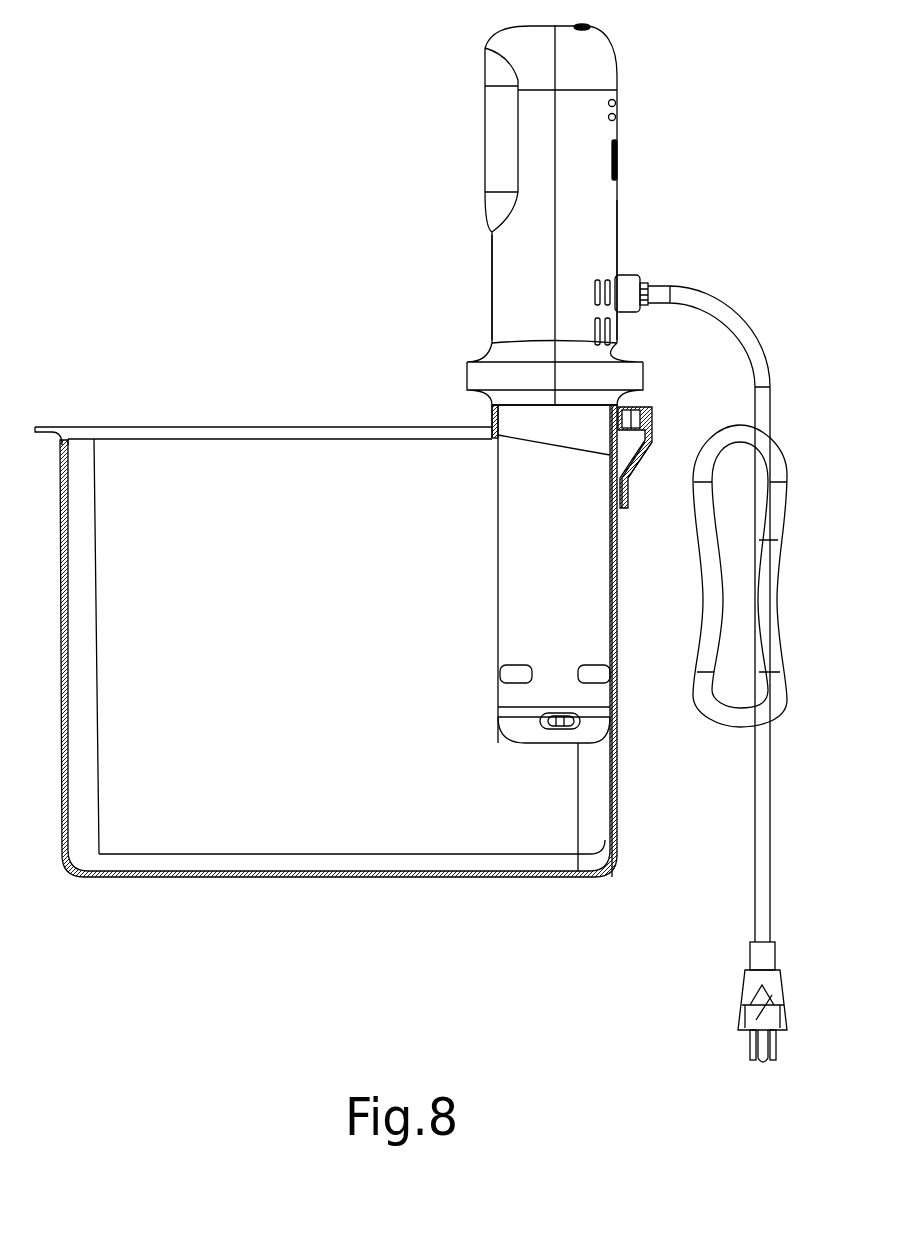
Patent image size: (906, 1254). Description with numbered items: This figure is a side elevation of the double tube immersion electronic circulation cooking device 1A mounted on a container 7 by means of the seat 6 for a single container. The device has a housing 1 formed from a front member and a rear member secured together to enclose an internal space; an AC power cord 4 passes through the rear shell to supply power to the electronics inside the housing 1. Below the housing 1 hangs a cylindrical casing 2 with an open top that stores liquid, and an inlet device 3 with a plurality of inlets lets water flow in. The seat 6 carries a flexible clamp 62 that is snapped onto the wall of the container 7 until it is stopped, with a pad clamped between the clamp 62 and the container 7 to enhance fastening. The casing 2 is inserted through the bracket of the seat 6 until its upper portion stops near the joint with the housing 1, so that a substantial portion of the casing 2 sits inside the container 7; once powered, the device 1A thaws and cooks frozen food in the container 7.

The housing 1 is at (605, 213).
The double tube immersion electronic circulation cooking device 1A is at (476, 300).
The cylindrical casing 2 is at (593, 560).
The inlet device 3 is at (600, 727).
The AC power cord 4 is at (717, 308).
The seat for single container 6 is at (638, 405).
The clamp 62 is at (636, 468).
The container 7 is at (197, 455).